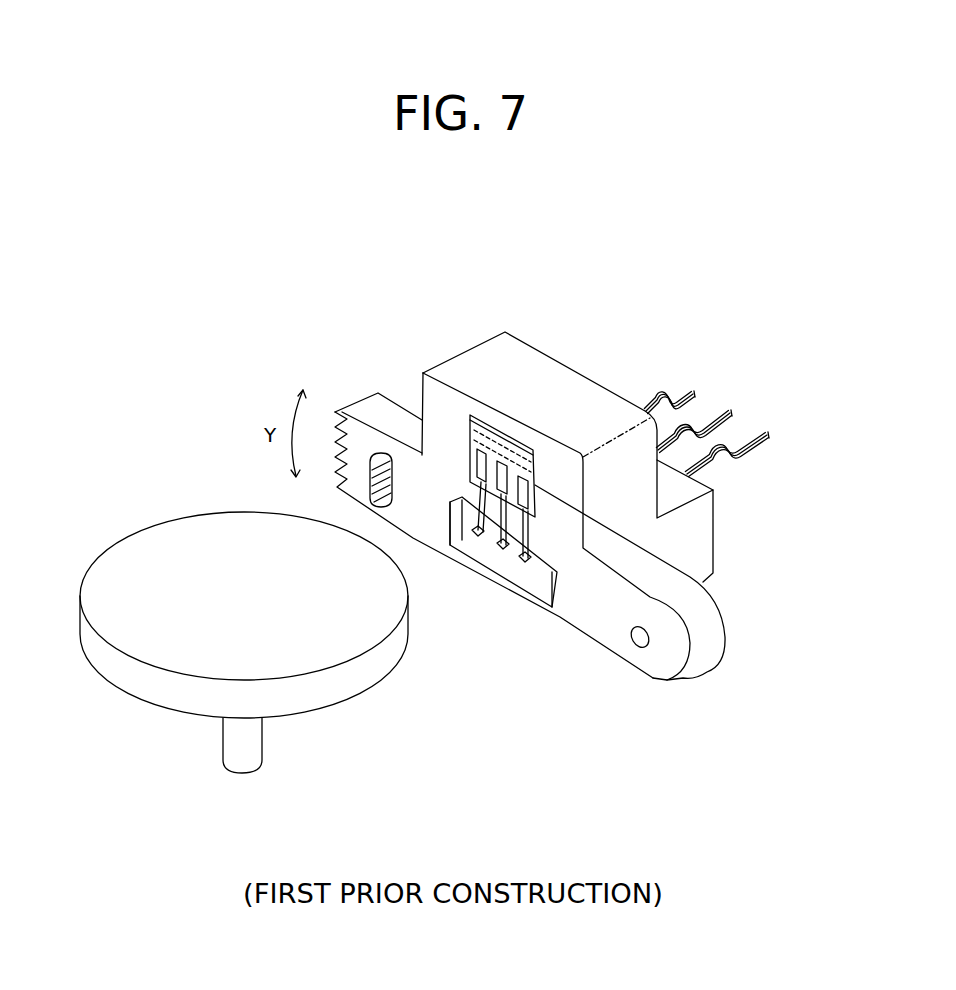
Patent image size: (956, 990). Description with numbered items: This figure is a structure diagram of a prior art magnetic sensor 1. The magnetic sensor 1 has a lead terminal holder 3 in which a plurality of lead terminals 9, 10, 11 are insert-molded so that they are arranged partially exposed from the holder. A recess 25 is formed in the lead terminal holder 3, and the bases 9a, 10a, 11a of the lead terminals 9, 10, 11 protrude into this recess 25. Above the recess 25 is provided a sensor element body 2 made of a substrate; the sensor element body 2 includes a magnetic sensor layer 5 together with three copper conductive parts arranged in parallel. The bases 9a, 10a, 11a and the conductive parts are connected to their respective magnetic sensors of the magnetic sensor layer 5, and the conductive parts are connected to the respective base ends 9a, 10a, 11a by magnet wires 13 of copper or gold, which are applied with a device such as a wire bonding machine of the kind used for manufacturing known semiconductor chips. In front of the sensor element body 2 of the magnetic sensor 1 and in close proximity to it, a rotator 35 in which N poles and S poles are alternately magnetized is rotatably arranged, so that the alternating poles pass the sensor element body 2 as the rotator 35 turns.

The magnetic sensor 1 is at (413, 317).
The sensor element body 2 is at (472, 415).
The lead terminal holder 3 is at (622, 534).
The magnetic sensor layer 5 is at (508, 426).
The lead terminal 9 is at (681, 392).
The lead terminal 10 is at (718, 412).
The lead terminal 11 is at (745, 440).
The base 9a is at (477, 535).
The base 10a is at (503, 548).
The base 11a is at (525, 560).
The magnet wire 13 is at (477, 470).
The recess 25 is at (538, 520).
The rotator 35 is at (128, 555).